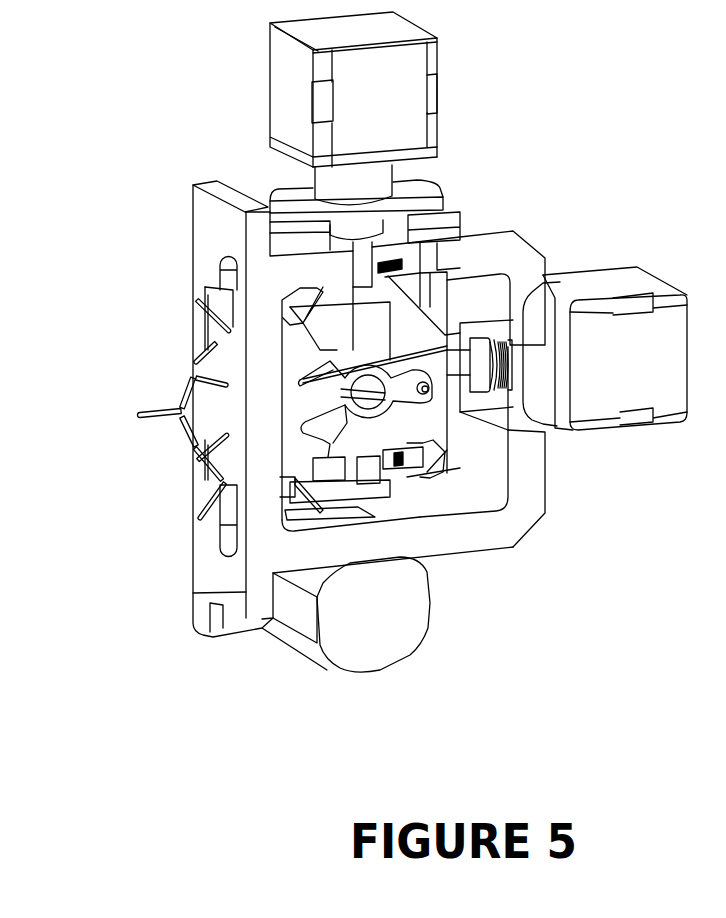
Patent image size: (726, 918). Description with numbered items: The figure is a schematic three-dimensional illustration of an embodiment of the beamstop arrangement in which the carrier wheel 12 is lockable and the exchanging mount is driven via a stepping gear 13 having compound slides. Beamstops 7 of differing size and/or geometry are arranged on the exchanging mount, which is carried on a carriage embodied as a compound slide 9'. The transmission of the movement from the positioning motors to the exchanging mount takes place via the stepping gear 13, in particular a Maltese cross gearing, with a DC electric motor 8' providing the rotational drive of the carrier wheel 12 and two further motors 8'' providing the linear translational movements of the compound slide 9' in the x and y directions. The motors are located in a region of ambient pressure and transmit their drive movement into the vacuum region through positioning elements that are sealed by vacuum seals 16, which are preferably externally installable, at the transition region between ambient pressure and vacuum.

The beamstop 7 is at (160, 416).
The DC electric motor 8' is at (412, 653).
The further motor 8'' is at (478, 221).
The compound slide 9' is at (265, 595).
The carrier wheel 12 is at (217, 362).
The stepping gear 13 is at (400, 389).
The vacuum seal 16 is at (350, 233).